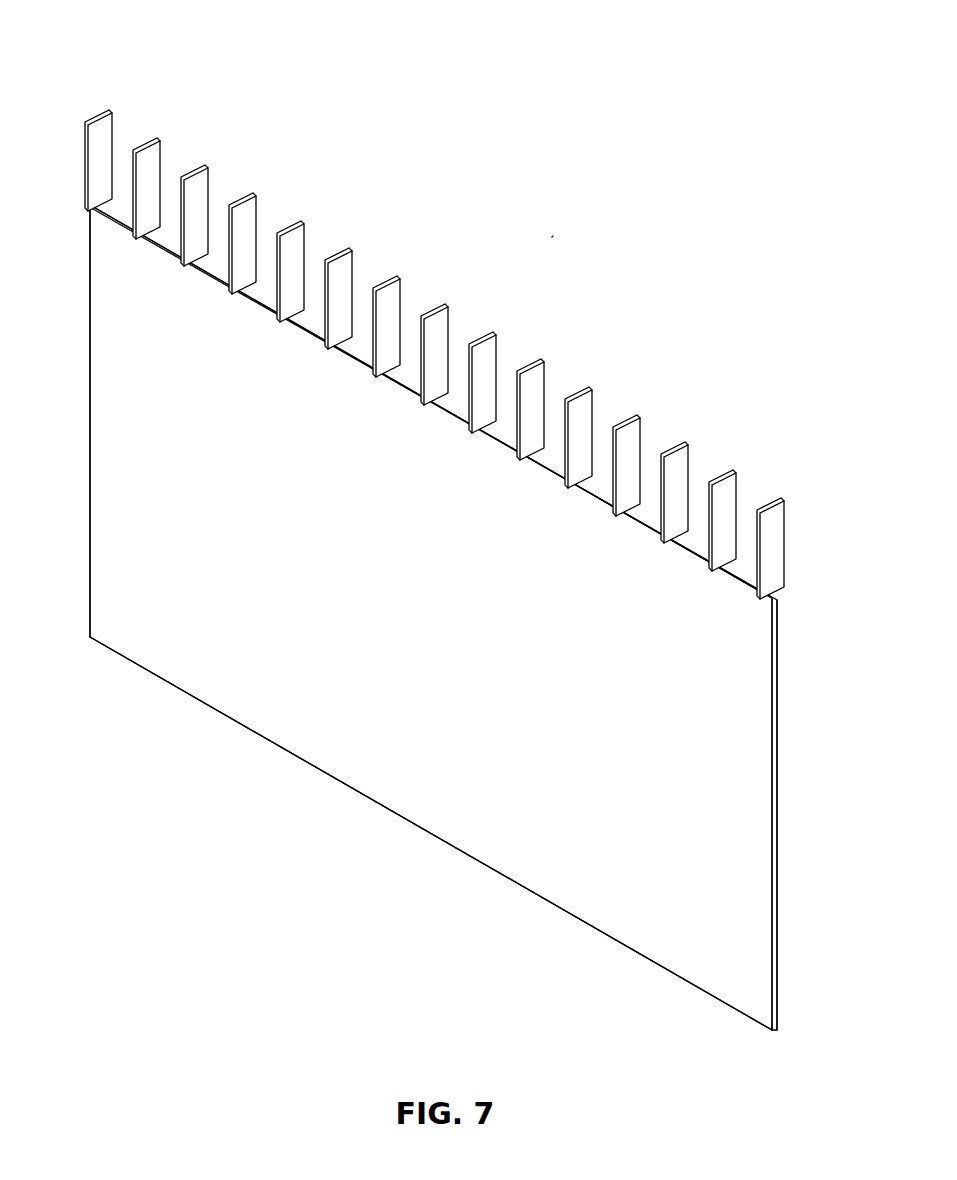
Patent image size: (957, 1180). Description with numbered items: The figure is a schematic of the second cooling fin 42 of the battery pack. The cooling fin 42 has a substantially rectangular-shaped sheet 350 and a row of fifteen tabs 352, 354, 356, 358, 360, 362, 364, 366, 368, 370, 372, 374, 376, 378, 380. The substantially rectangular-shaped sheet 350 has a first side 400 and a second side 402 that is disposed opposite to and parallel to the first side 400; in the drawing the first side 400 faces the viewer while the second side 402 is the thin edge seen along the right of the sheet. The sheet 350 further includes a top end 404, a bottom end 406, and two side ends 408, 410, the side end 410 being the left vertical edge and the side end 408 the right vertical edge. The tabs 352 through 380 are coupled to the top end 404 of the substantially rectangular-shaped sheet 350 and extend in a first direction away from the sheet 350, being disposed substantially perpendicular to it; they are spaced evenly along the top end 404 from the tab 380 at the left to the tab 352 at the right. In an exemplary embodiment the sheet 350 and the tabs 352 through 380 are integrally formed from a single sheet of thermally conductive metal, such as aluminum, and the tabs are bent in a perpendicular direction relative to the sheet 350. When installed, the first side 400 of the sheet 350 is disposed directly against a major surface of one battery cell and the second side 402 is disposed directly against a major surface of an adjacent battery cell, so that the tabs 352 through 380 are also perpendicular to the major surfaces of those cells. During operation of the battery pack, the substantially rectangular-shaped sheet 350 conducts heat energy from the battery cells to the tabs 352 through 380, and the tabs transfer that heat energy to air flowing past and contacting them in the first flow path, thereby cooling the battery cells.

The cooling fin 42 is at (556, 230).
The substantially rectangular-shaped sheet 350 is at (752, 797).
The tab 352 is at (764, 501).
The tab 354 is at (716, 473).
The tab 356 is at (668, 445).
The tab 358 is at (620, 418).
The tab 360 is at (572, 390).
The tab 362 is at (524, 362).
The tab 364 is at (476, 335).
The tab 366 is at (428, 307).
The tab 368 is at (380, 279).
The tab 370 is at (332, 251).
The tab 372 is at (284, 224).
The tab 374 is at (236, 196).
The tab 376 is at (188, 168).
The tab 378 is at (140, 141).
The tab 380 is at (92, 113).
The first side 400 is at (690, 963).
The second side 402 is at (777, 962).
The top end 404 is at (742, 571).
The bottom end 406 is at (550, 903).
The side end 408 is at (777, 708).
The side end 410 is at (90, 448).